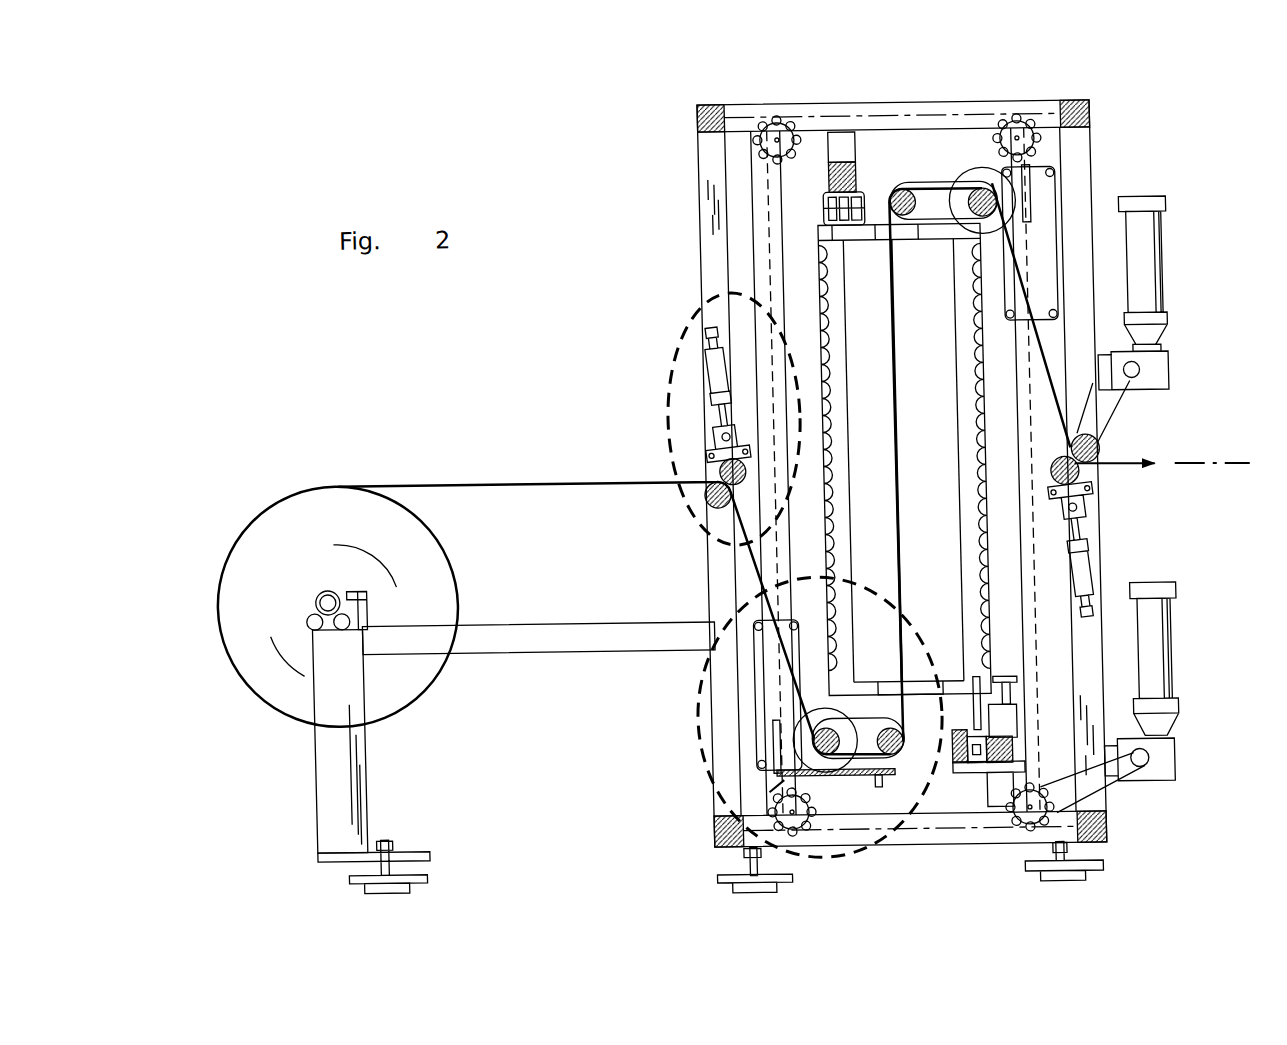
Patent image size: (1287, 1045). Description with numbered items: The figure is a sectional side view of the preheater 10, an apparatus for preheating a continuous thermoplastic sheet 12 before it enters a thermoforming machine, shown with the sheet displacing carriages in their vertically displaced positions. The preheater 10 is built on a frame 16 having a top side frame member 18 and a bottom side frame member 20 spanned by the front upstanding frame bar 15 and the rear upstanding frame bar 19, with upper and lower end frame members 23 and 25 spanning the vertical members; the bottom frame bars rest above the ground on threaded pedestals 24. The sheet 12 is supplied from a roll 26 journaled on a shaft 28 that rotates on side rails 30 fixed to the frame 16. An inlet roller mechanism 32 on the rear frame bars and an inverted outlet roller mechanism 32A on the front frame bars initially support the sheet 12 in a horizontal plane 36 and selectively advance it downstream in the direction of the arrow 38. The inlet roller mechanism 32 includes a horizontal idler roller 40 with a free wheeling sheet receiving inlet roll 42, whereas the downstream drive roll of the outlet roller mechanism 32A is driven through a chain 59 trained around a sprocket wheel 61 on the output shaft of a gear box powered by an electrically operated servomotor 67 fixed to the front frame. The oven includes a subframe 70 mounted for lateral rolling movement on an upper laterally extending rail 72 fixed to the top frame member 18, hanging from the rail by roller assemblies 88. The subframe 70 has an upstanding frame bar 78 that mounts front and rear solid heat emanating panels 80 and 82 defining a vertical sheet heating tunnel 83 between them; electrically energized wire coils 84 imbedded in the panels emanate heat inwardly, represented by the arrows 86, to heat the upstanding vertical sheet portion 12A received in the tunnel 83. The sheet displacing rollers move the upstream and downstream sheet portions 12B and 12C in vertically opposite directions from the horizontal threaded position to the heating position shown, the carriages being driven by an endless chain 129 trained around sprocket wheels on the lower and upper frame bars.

The preheater 10 is at (1104, 140).
The thermoplastic sheet 12 is at (414, 484).
The vertical sheet portion 12A is at (885, 573).
The upstream sheet portion 12B is at (844, 762).
The downstream sheet portion 12C is at (933, 188).
The front upstanding frame bar 15 is at (1073, 200).
The frame 16 is at (679, 242).
The top side frame member 18 is at (843, 106).
The rear upstanding frame bar 19 is at (698, 200).
The bottom side frame member 20 is at (923, 836).
The upper end frame member 23 is at (1068, 111).
The threaded pedestal 24 is at (701, 873).
The lower end frame member 25 is at (700, 121).
The roll 26 is at (398, 734).
The shaft 28 is at (304, 599).
The side rail 30 is at (540, 628).
The inlet roller mechanism 32 is at (649, 361).
The outlet roller mechanism 32A is at (1095, 516).
The horizontal plane 36 is at (1178, 473).
The arrow 38 is at (1111, 476).
The horizontal idler roller 40 is at (689, 498).
The sheet receiving inlet roll 42 is at (702, 512).
The chain 59 is at (1106, 420).
The sprocket wheel 61 is at (1129, 376).
The servomotor 67 is at (1155, 659).
The subframe 70 is at (924, 248).
The upper laterally extending rail 72 is at (848, 192).
The upstanding frame bar 78 is at (883, 302).
The front heat emanating panel 80 is at (950, 446).
The rear heat emanating panel 82 is at (844, 449).
The vertical sheet heating tunnel 83 is at (871, 500).
The electrically energized wire coil 84 is at (832, 349).
The arrows 86 is at (835, 389).
The roller assembly 88 is at (835, 210).
The endless chain 129 is at (824, 824).